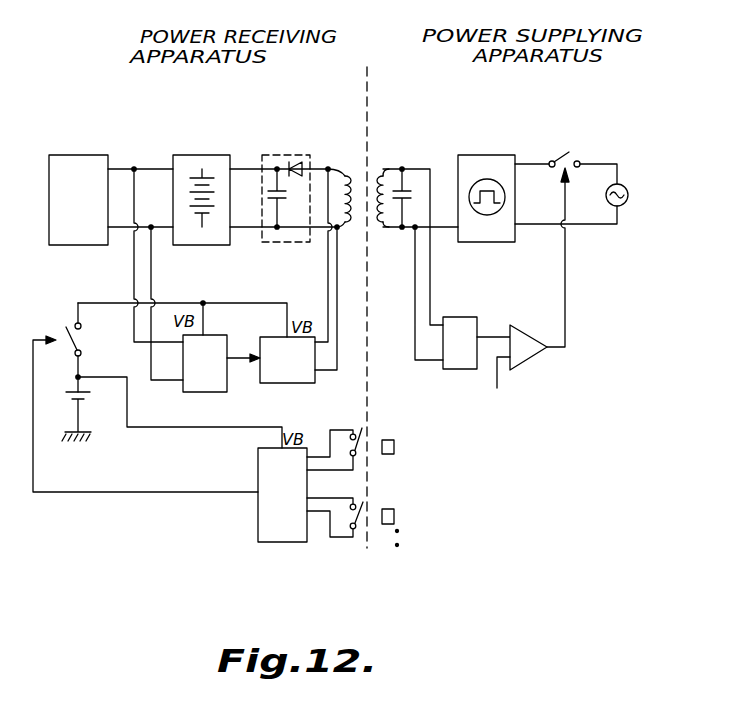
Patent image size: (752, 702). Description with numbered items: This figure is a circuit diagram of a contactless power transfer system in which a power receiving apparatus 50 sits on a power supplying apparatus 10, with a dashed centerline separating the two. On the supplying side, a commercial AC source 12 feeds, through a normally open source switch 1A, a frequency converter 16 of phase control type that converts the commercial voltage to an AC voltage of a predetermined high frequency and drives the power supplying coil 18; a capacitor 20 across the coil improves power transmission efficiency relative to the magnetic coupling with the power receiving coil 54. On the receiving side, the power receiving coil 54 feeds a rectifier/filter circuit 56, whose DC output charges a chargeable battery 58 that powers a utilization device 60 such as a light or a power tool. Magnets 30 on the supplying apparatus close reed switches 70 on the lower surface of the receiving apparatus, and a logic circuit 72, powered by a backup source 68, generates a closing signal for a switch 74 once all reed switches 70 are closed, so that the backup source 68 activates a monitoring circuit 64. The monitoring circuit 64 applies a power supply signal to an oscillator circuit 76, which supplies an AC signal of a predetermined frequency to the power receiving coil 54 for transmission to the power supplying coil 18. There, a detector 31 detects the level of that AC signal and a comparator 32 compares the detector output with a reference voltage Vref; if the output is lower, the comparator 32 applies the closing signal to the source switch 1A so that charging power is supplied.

The power supplying apparatus 10 is at (433, 80).
The power receiving apparatus 50 is at (353, 80).
The utilization device 60 is at (78, 153).
The chargeable battery 58 is at (198, 153).
The rectifier/filter circuit 56 is at (285, 152).
The power receiving coil 54 is at (347, 172).
The power supplying coil 18 is at (385, 168).
The capacitor 20 is at (413, 190).
The frequency converter 16 is at (490, 153).
The switch 1A is at (574, 156).
The commercial AC source 12 is at (628, 186).
The detector 31 is at (460, 316).
The comparator 32 is at (535, 357).
The switch 74 is at (88, 346).
The backup source 68 is at (90, 400).
The monitoring circuit 64 is at (212, 392).
The oscillator circuit 76 is at (292, 383).
The logic circuit 72 is at (285, 542).
The reed switches 70 is at (357, 425).
The magnets 30 is at (395, 447).